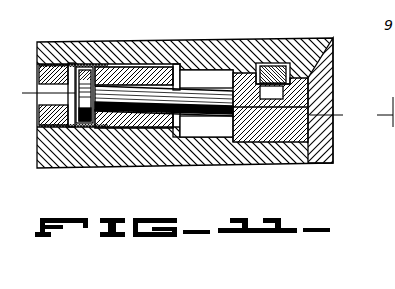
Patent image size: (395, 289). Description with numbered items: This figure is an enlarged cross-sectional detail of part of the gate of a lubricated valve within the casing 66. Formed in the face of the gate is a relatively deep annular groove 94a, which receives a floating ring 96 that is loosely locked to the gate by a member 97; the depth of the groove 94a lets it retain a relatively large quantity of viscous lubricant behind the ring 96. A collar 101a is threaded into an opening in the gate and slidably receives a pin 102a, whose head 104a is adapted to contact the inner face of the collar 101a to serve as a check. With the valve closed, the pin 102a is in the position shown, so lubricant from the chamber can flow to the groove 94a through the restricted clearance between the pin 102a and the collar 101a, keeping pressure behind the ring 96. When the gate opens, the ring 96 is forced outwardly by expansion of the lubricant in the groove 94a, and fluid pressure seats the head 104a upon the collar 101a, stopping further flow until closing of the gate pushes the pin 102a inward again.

The casing 66 is at (318, 150).
The floating ring 96 is at (310, 89).
The member 97 is at (273, 68).
The collar 101a is at (137, 72).
The pin 102a is at (130, 124).
The head 104a is at (83, 70).
The groove 94a is at (219, 137).